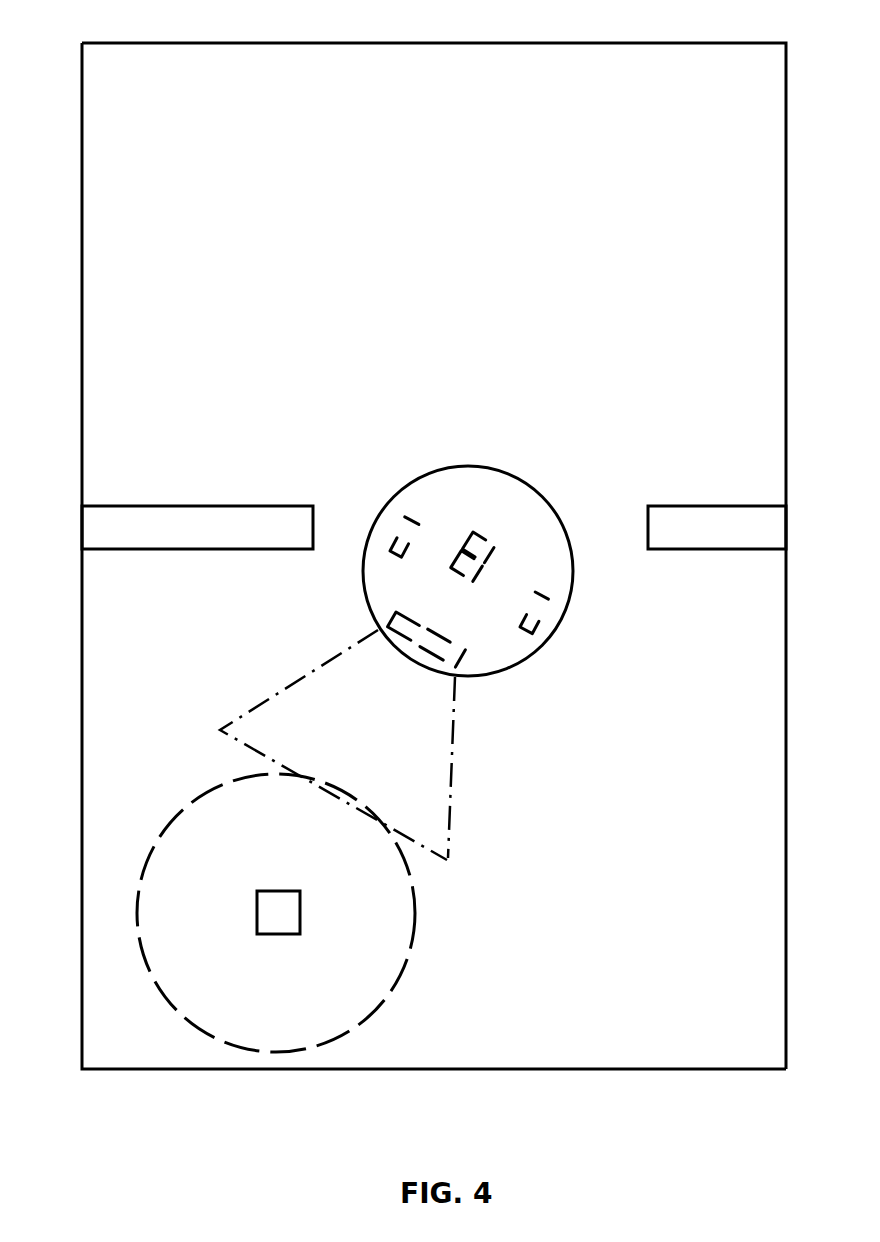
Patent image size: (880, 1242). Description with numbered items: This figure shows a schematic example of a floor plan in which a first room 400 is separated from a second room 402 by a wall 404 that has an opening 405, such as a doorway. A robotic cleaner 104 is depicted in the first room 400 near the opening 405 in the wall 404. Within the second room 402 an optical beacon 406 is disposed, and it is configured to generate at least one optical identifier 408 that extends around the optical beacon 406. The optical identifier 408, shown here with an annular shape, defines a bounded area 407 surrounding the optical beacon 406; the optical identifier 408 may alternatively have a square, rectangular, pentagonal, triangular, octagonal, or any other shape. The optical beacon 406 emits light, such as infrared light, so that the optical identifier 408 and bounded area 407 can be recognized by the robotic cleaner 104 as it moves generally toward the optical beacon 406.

The first room 400 is at (188, 60).
The second room 402 is at (102, 614).
The wall 404 is at (175, 503).
The opening 405 is at (309, 494).
The robotic cleaner 104 is at (588, 466).
The optical beacon 406 is at (264, 890).
The bounded area 407 is at (170, 889).
The optical identifier 408 is at (407, 958).